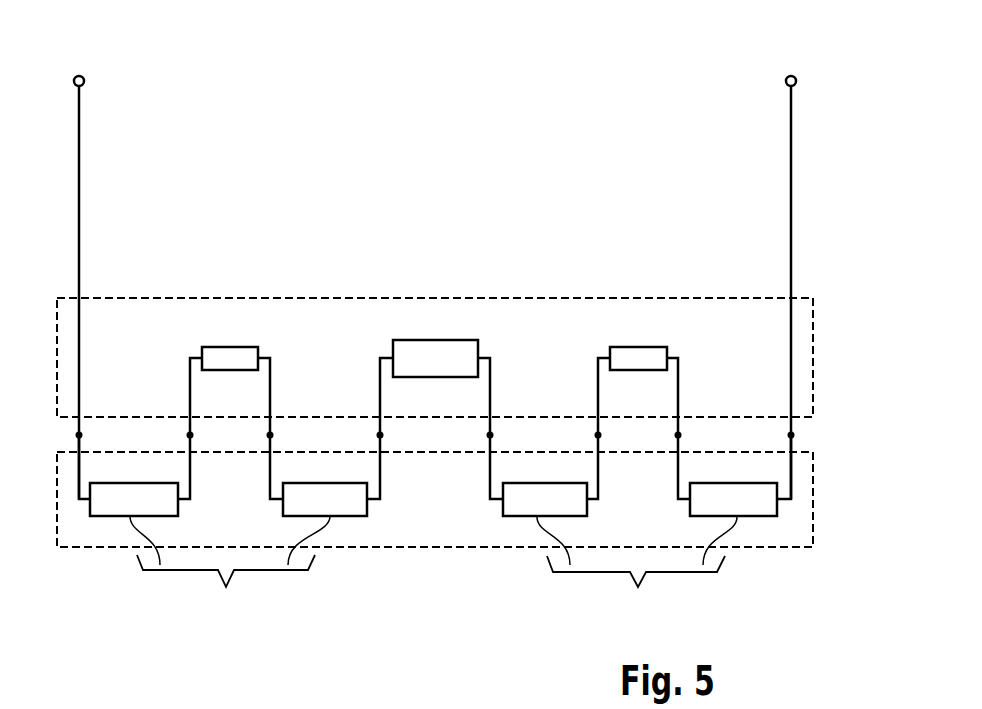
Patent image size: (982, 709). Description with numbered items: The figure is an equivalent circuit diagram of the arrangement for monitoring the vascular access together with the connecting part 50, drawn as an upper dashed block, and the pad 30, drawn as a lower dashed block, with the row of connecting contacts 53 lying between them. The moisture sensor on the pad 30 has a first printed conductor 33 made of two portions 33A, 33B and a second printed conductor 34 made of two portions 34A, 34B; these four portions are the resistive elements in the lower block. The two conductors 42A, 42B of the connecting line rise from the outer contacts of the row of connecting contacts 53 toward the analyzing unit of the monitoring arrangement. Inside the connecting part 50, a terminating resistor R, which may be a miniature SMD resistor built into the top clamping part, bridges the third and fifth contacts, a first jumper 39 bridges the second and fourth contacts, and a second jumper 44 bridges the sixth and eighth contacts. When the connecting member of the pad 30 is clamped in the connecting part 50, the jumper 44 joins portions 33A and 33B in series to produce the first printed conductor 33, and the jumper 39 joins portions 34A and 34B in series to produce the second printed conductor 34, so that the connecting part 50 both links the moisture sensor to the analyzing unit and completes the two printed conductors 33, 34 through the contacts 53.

The conductor of the connecting line 42A is at (79, 178).
The conductor of the connecting line 42B is at (791, 178).
The connecting part 50 is at (813, 358).
The pad 30 is at (813, 497).
The connecting contacts 53 is at (406, 435).
The second jumper 44 is at (230, 360).
The terminating resistor R is at (432, 352).
The first jumper 39 is at (640, 353).
The first portion of the first printed conductor 33A is at (165, 508).
The second portion of the first printed conductor 33B is at (355, 508).
The first portion of the second printed conductor 34A is at (690, 507).
The second portion of the second printed conductor 34B is at (503, 508).
The first printed conductor 33 is at (230, 568).
The second printed conductor 34 is at (637, 569).